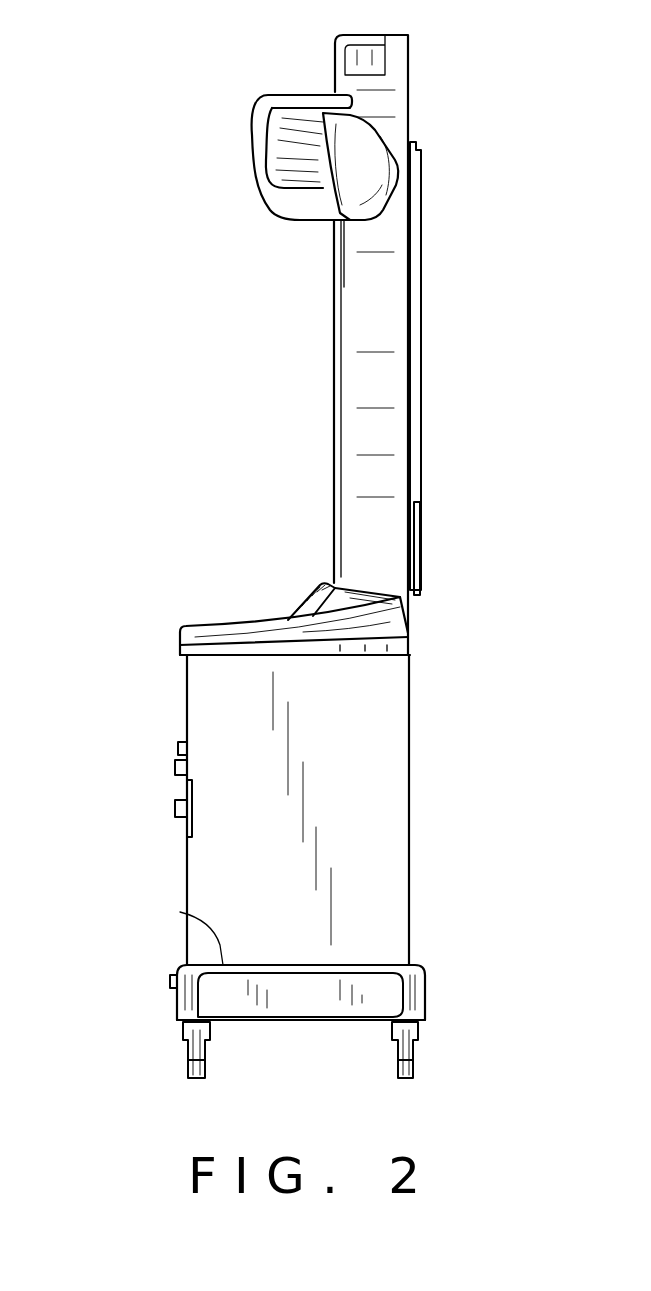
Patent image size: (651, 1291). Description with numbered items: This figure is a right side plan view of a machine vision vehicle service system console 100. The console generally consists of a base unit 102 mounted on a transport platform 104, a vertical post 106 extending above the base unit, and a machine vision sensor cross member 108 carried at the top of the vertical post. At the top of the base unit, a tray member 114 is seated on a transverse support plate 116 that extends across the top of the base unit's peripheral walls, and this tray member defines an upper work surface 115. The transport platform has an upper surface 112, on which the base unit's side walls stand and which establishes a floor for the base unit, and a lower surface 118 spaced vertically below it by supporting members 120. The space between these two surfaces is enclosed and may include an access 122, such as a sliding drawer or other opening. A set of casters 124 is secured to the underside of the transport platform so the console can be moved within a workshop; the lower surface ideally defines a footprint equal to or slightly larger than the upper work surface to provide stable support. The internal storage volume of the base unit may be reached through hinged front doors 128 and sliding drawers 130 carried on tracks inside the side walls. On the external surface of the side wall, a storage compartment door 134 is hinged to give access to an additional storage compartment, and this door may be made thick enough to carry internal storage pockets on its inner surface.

The machine vision vehicle service system console 100 is at (278, 504).
The base unit 102 is at (171, 692).
The transport platform 104 is at (439, 987).
The vertical post 106 is at (320, 372).
The machine vision sensor cross member 108 is at (246, 105).
The upper surface 112 is at (200, 920).
The tray member 114 is at (405, 610).
The upper work surface 115 is at (239, 614).
The transverse support plate 116 is at (353, 655).
The lower surface 118 is at (315, 1032).
The supporting members 120 is at (383, 994).
The access 122 is at (161, 983).
The casters 124 is at (176, 1044).
The front doors 128 is at (166, 810).
The sliding drawers 130 is at (166, 750).
The storage compartment doors 134 is at (362, 857).